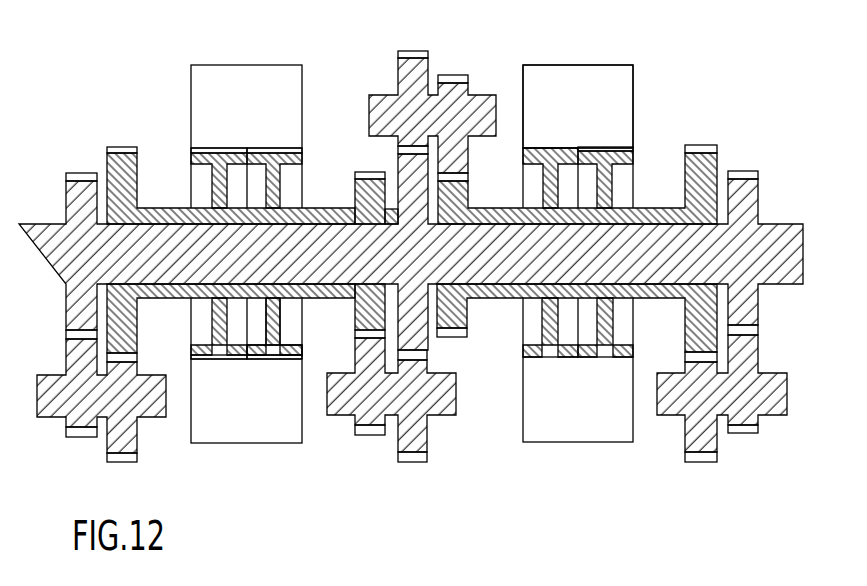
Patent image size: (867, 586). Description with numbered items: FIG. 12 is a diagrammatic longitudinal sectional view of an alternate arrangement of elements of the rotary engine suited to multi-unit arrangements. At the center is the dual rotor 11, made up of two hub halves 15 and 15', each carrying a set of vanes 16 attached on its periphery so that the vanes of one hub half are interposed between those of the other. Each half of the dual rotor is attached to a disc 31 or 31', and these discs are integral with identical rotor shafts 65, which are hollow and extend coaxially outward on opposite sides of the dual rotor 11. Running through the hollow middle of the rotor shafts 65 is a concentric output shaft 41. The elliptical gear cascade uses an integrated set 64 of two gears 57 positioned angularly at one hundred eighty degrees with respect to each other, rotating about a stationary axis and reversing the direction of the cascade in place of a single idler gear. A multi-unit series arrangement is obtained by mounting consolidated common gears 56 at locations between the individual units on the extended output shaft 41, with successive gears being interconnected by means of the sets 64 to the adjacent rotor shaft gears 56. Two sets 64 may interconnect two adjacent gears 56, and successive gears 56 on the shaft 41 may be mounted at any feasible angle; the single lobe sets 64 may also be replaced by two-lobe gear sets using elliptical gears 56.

The dual rotor 11 is at (256, 66).
The vanes 16 is at (630, 73).
The hub half 15 is at (412, 165).
The hub half 15' is at (415, 164).
The disc 31 is at (412, 370).
The disc 31' is at (413, 328).
The output shaft 41 is at (782, 285).
The gear 56 is at (79, 175).
The idler gear 57 is at (398, 50).
The integrated set of two gears 64 is at (432, 51).
The rotor shafts 65 is at (160, 209).